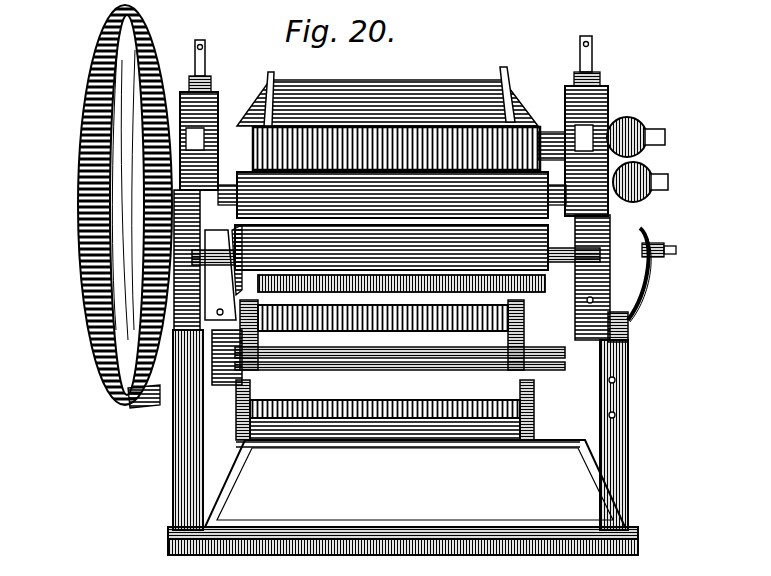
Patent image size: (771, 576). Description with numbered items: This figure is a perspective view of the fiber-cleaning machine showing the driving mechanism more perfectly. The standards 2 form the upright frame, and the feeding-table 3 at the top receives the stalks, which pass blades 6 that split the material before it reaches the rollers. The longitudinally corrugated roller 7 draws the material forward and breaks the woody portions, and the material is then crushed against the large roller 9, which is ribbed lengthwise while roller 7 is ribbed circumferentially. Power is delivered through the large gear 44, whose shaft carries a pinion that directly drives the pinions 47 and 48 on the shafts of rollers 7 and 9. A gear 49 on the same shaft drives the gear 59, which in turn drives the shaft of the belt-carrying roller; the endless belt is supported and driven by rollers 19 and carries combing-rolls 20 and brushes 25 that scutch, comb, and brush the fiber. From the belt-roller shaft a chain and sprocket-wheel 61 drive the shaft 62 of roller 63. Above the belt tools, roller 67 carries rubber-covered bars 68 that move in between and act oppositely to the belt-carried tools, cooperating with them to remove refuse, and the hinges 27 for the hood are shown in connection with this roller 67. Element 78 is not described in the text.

The standards 2 is at (415, 483).
The feeding-table 3 is at (387, 90).
The blades 6 is at (634, 318).
The roller 7 is at (528, 120).
The roller 9 is at (392, 195).
The rollers 19 is at (400, 335).
The combing-rolls 20 is at (385, 409).
The brushes 25 is at (384, 441).
The hinges 27 is at (622, 325).
The large gear 44 is at (79, 283).
The pinion 47 is at (608, 135).
The pinion 48 is at (650, 168).
The gear 49 is at (205, 88).
The gear 59 is at (150, 400).
The sprocket-wheel 61 is at (644, 238).
The shaft 62 is at (153, 279).
The roller 63 is at (223, 281).
The roller 67 is at (396, 258).
The rubber-covered bars 68 is at (209, 208).
The roller support 78 is at (272, 408).